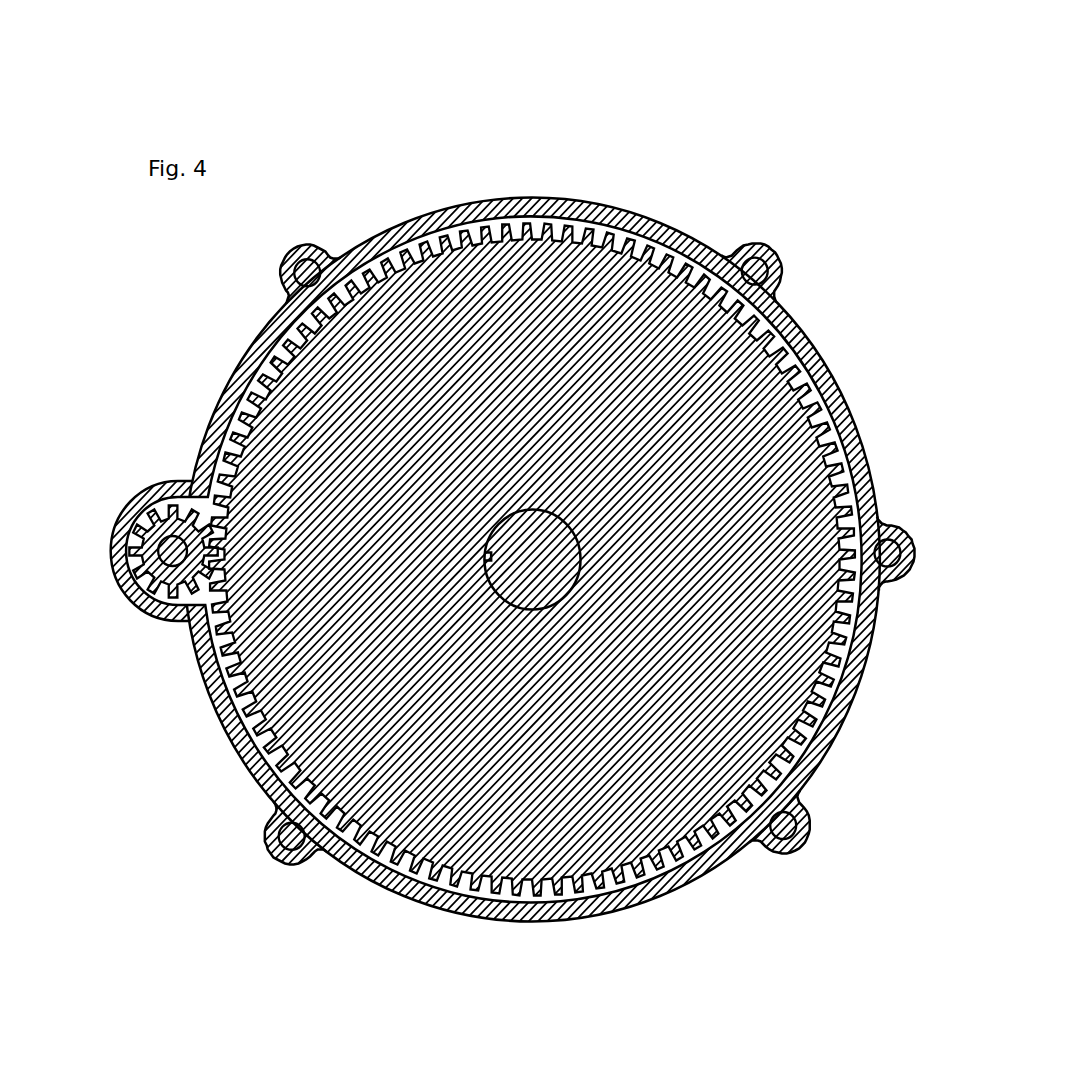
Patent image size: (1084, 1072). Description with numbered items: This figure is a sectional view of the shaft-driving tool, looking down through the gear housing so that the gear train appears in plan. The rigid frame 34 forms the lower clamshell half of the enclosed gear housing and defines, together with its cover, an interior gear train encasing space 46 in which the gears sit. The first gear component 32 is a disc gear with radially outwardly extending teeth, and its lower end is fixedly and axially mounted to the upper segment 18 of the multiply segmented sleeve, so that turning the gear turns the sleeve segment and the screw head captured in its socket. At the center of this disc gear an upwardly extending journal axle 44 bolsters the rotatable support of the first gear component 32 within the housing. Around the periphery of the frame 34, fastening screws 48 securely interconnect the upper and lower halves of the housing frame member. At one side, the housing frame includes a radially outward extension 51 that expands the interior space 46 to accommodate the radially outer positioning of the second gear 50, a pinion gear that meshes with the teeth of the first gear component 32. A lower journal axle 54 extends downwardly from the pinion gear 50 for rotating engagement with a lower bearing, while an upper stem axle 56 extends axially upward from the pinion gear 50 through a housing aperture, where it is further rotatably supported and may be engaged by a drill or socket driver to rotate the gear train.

The upper segment 18 is at (715, 655).
The first gear component 32 is at (595, 775).
The rigid frame 34 is at (592, 200).
The journal axle 44 is at (572, 572).
The interior gear train encasing space 46 is at (468, 228).
The fastening screws 48 is at (898, 545).
The second gear 50 is at (116, 528).
The radially outward extension 51 is at (135, 603).
The lower journal axle 54 is at (532, 536).
The upper stem axle 56 is at (162, 522).